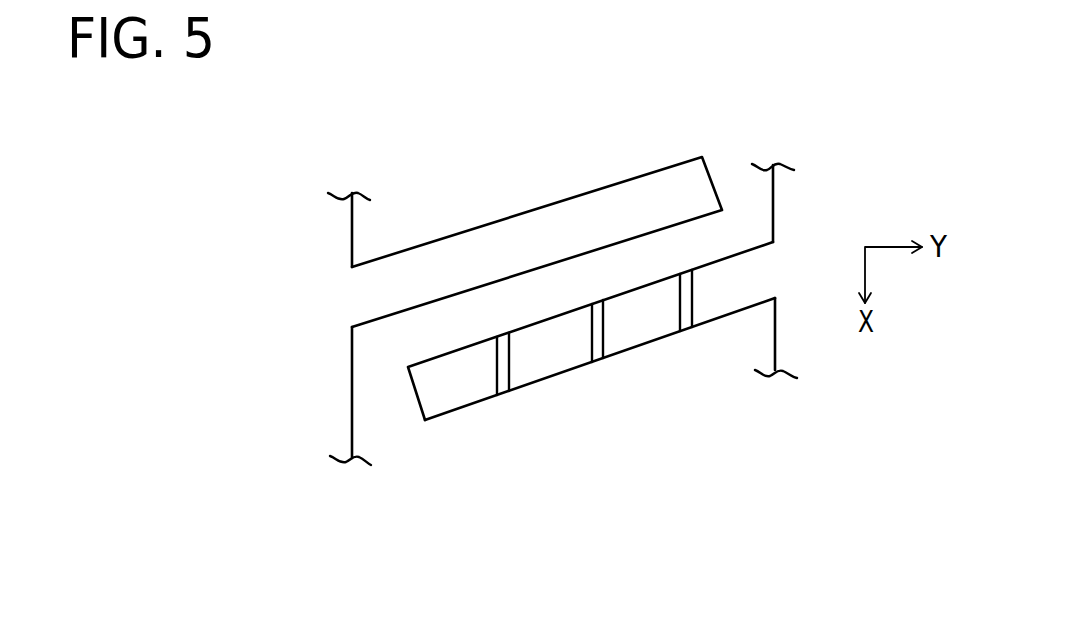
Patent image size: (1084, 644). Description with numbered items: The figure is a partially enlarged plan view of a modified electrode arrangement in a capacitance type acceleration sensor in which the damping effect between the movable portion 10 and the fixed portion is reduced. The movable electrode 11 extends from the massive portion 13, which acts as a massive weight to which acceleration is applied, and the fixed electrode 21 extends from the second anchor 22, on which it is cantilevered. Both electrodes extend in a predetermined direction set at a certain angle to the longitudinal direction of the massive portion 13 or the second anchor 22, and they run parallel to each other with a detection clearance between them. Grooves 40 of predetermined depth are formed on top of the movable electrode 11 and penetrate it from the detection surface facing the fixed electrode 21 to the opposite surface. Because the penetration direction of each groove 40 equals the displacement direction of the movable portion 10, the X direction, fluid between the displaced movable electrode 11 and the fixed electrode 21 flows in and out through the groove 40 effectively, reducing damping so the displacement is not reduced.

The movable portion 10 is at (722, 336).
The movable electrode 11 is at (557, 360).
The massive portion 13 is at (790, 213).
The fixed electrode 21 is at (465, 247).
The second anchor 22 is at (327, 308).
The groove 40 is at (495, 378).